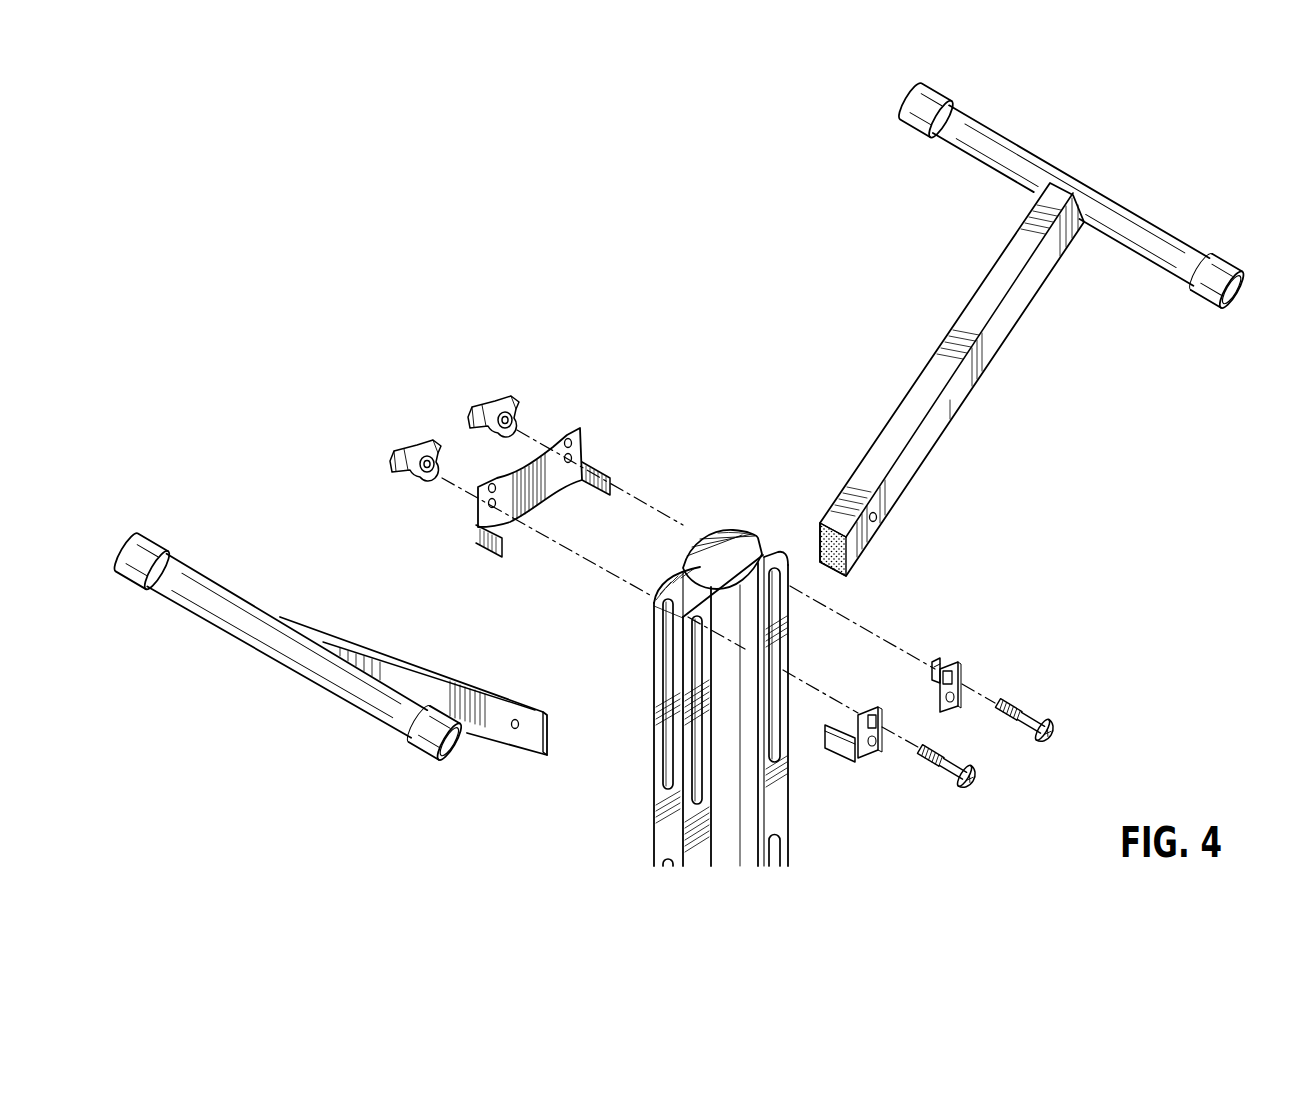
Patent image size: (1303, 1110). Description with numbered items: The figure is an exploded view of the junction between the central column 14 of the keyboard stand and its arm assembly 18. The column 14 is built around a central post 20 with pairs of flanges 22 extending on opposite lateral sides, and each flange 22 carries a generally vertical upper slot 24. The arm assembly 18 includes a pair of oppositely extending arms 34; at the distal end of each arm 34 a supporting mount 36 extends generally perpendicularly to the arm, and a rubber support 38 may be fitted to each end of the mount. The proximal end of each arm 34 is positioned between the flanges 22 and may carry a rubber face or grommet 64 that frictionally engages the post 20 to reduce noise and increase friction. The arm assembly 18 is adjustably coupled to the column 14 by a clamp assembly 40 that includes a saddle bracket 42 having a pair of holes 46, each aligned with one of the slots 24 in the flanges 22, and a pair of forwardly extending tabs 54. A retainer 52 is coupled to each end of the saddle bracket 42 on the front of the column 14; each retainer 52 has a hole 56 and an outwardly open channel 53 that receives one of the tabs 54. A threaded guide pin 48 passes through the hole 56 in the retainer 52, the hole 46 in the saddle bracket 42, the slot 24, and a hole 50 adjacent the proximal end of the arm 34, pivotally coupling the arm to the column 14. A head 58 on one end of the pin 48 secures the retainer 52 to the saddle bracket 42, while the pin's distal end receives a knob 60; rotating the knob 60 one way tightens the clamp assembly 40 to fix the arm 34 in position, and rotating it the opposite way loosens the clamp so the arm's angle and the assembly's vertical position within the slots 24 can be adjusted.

The column 14 is at (727, 530).
The arm assembly 18 is at (1158, 176).
The central post 20 is at (683, 575).
The flanges 22 is at (690, 838).
The upper slot 24 is at (690, 647).
The arm 34 is at (932, 374).
The supporting mount 36 is at (1046, 168).
The rubber support 38 is at (936, 98).
The clamp assembly 40 is at (568, 408).
The saddle bracket 42 is at (554, 486).
The holes 46 is at (576, 453).
The guide pin 48 is at (1028, 714).
The hole 50 is at (877, 523).
The retainer 52 is at (955, 709).
The channel 53 is at (937, 661).
The tabs 54 is at (614, 474).
The hole 56 is at (957, 674).
The head 58 is at (1049, 743).
The knob 60 is at (489, 403).
The rubber face 64 is at (820, 545).